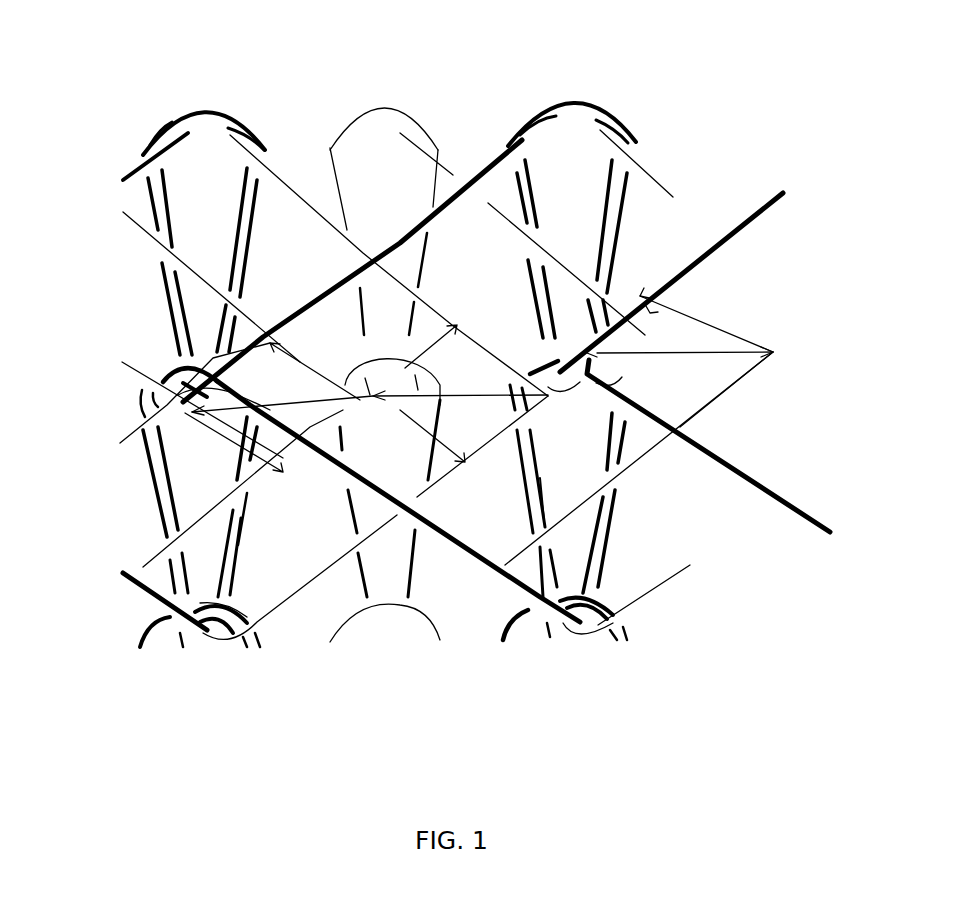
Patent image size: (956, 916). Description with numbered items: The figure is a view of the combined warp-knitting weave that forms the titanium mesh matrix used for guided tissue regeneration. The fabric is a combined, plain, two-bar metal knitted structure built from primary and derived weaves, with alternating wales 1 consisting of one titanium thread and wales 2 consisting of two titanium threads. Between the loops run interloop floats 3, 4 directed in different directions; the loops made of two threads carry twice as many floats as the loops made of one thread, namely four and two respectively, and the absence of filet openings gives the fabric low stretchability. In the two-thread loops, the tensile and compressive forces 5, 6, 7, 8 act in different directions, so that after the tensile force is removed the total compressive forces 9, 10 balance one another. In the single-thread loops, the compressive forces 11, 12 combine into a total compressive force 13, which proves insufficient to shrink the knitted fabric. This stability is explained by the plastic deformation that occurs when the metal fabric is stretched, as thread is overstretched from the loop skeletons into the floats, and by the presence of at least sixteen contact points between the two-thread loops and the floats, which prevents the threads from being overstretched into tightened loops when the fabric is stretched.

The wales consisting of one thread 1 is at (367, 560).
The wales consisting of two threads 2 is at (517, 637).
The interloop float 3 is at (547, 620).
The interloop float 4 is at (593, 637).
The compression force for loops consisting of two threads 5 is at (520, 432).
The compression force for loops consisting of two threads 6 is at (445, 310).
The compression force for loops consisting of two threads 7 is at (590, 365).
The compression force for loops consisting of two threads 8 is at (640, 308).
The total compression force for loops consisting of two threads 9 is at (728, 353).
The total compression force for loops consisting of two threads 10 is at (497, 393).
The compression force for loops consisting of one thread 11 is at (333, 405).
The compression force for loops consisting of one thread 12 is at (167, 297).
The total compression force for loops consisting of one thread 13 is at (207, 420).